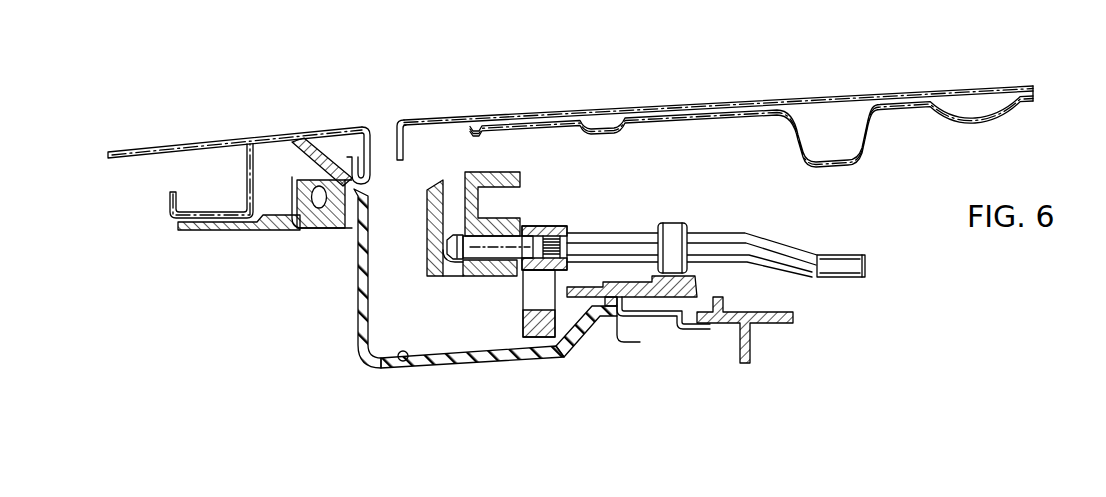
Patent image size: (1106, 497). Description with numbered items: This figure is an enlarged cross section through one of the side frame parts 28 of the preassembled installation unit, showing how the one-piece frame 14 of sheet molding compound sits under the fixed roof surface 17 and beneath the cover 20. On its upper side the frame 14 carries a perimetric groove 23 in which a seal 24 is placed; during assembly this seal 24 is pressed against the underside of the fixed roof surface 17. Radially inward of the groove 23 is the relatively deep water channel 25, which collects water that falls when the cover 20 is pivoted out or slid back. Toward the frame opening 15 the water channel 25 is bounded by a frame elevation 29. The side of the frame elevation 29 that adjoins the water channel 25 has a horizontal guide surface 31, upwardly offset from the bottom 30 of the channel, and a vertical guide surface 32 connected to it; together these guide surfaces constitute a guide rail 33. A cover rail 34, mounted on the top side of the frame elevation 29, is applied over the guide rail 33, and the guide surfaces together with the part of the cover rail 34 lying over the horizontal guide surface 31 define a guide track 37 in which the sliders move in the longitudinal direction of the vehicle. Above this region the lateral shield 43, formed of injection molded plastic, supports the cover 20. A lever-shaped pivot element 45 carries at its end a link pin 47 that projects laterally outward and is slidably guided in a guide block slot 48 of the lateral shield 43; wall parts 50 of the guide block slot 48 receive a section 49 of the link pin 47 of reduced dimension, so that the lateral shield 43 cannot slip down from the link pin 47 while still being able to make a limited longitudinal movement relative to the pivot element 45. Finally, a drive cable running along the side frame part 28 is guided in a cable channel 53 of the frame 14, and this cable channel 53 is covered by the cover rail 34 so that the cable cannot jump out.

The frame 14 is at (358, 288).
The frame opening 15 is at (920, 337).
The fixed roof surface 17 is at (186, 144).
The cover 20 is at (733, 102).
The perimetric groove 23 is at (308, 232).
The seal 24 is at (325, 143).
The water channel 25 is at (406, 364).
The side frame parts 28 is at (346, 349).
The frame elevation 29 is at (650, 303).
The bottom 30 is at (458, 365).
The horizontal guide surface 31 is at (560, 352).
The vertical guide surface 32 is at (622, 322).
The guide rail 33 is at (603, 298).
The cover rail 34 is at (612, 342).
The guide track 37 is at (605, 336).
The lateral shield 43 is at (488, 176).
The pivot element 45 is at (535, 298).
The link pin 47 is at (508, 243).
The guide block slot 48 is at (478, 279).
The section of reduced dimension 49 is at (456, 236).
The wall parts 50 is at (460, 280).
The cable channel 53 is at (695, 318).